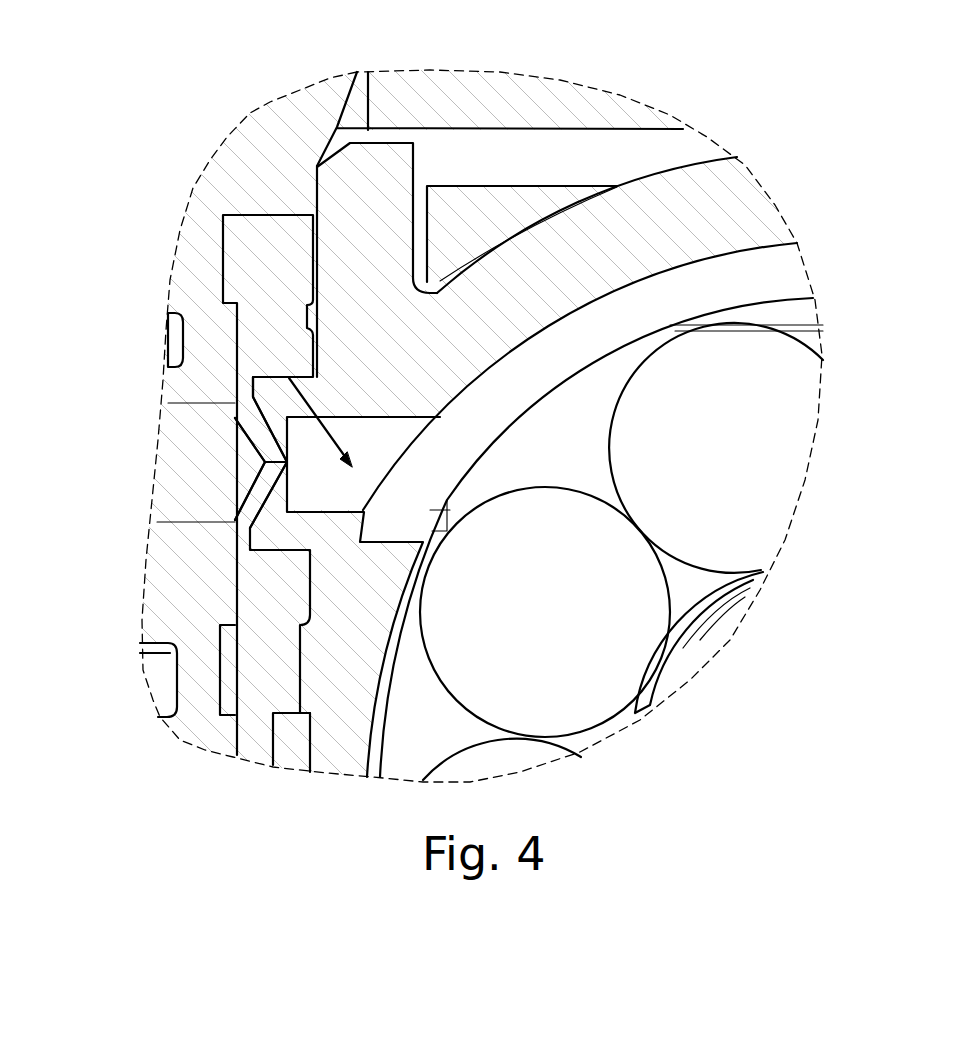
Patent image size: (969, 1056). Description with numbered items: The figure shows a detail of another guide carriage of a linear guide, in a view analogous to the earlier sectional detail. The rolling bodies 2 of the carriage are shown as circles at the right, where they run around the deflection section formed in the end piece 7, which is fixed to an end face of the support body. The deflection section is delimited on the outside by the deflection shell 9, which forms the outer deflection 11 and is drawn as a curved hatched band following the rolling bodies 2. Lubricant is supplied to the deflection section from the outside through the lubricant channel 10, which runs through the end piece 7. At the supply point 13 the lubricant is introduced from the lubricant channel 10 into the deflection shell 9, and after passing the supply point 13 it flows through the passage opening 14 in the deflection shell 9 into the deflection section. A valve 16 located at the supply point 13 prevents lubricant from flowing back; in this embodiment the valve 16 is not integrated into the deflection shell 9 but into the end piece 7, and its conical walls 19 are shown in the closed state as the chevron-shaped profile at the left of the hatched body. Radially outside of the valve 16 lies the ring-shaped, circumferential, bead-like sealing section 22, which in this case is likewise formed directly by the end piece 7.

The rolling bodies 2 is at (762, 475).
The end piece 7 is at (285, 142).
The deflection shell 9 is at (618, 333).
The outer deflection 11 is at (737, 210).
The lubricant channel 10 is at (190, 467).
The supply point 13 is at (297, 455).
The passage opening 14 is at (287, 377).
The valve 16 is at (174, 455).
The conical walls 19 is at (266, 437).
The sealing section 22 is at (313, 318).